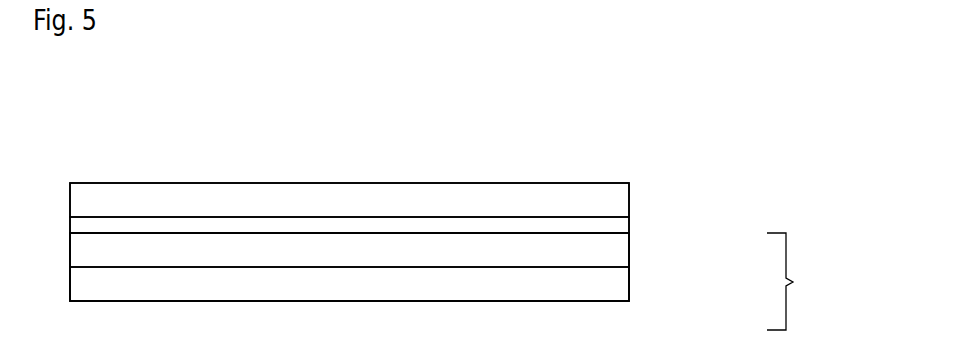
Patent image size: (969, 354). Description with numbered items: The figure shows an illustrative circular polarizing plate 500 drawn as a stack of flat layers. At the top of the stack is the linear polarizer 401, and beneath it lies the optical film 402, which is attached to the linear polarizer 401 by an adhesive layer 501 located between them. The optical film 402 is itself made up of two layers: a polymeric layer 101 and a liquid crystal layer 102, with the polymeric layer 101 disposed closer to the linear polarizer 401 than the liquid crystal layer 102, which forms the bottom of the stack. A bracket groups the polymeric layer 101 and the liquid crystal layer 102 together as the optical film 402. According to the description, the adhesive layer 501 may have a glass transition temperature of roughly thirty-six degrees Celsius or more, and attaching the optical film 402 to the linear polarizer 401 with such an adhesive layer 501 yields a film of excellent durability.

The circular polarizing plate 500 is at (118, 162).
The linear polarizer 401 is at (342, 194).
The adhesive layer 501 is at (618, 225).
The polymeric layer 101 is at (610, 254).
The liquid crystal layer 102 is at (610, 288).
The optical film 402 is at (794, 282).